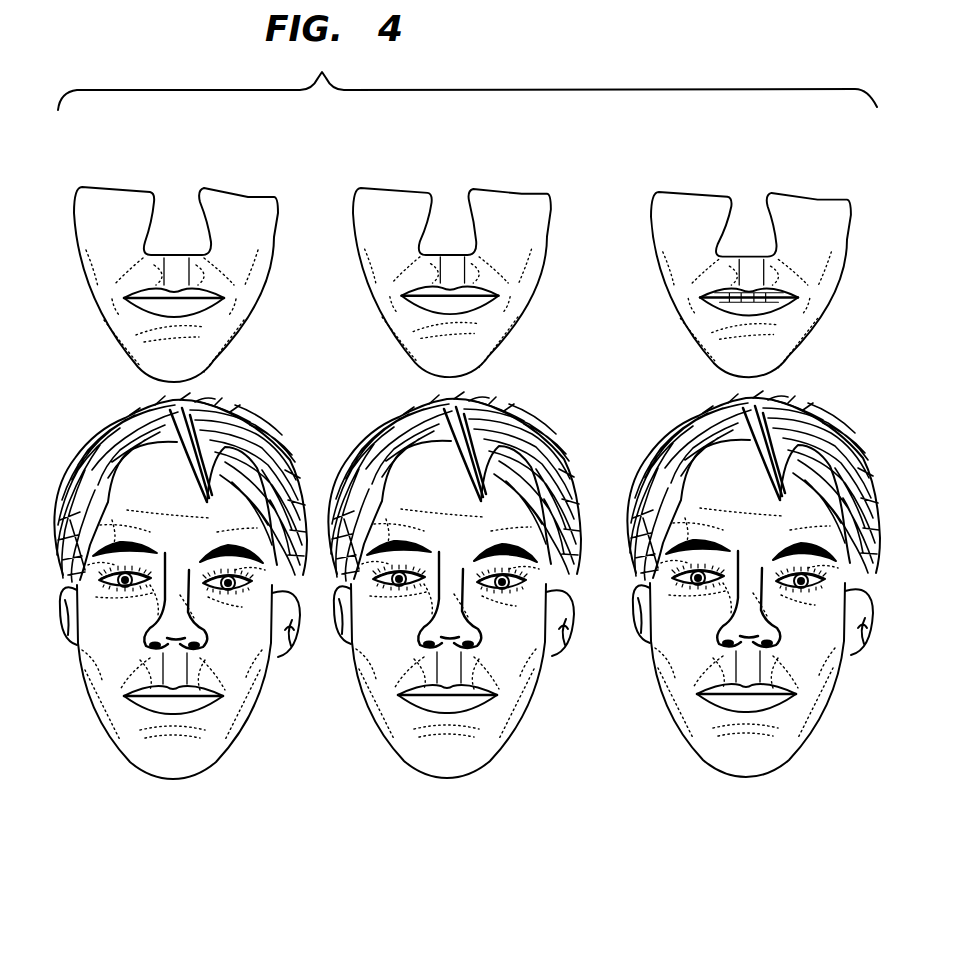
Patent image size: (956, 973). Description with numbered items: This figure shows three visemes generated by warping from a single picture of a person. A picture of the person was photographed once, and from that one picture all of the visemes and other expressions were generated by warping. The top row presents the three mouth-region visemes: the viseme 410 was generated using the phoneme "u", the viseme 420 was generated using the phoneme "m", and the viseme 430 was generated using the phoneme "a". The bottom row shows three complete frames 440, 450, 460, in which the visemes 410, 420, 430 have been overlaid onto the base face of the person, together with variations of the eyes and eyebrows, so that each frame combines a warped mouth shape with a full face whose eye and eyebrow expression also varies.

The viseme 410 is at (127, 217).
The viseme 420 is at (385, 207).
The viseme 430 is at (698, 217).
The frame 440 is at (202, 760).
The frame 450 is at (478, 753).
The frame 460 is at (775, 747).